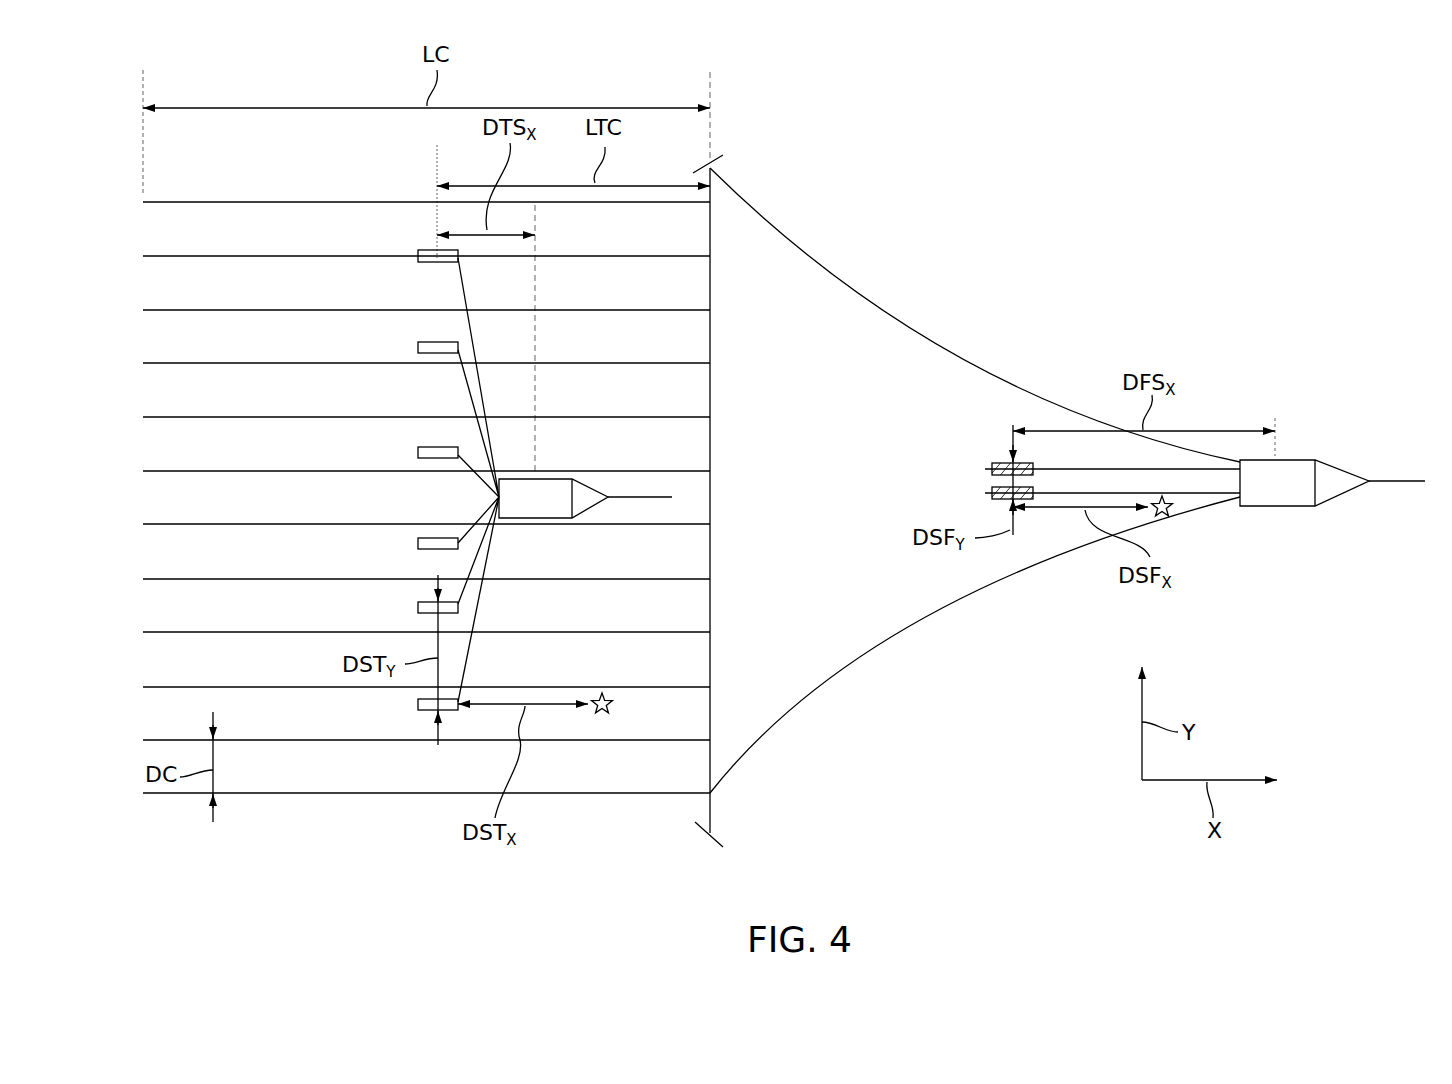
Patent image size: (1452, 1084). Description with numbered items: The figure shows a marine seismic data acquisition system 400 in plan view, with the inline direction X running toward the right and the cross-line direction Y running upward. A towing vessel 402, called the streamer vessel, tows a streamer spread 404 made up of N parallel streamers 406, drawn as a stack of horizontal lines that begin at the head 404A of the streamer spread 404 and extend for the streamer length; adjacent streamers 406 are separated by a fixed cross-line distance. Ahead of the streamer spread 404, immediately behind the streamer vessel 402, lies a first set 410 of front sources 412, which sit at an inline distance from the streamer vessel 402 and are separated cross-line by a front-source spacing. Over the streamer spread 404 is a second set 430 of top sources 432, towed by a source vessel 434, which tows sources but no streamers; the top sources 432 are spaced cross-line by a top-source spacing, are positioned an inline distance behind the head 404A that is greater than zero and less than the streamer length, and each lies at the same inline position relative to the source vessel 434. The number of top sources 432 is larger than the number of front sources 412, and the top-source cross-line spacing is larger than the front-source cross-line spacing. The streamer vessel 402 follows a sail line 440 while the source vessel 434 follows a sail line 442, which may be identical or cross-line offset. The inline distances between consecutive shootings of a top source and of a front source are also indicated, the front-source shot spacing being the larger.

The marine seismic data acquisition system 400 is at (1315, 154).
The towing vessel 402 is at (1310, 445).
The streamer spread 404 is at (293, 802).
The head of the streamer spread 404A is at (720, 400).
The streamers 406 is at (560, 795).
The first set of front sources 410 is at (1035, 530).
The front sources 412 is at (990, 468).
The second set of top sources 430 is at (405, 345).
The top sources 432 is at (437, 459).
The source vessel 434 is at (555, 487).
The sail line of streamer vessel 440 is at (1396, 485).
The sail line of source vessel 442 is at (640, 497).